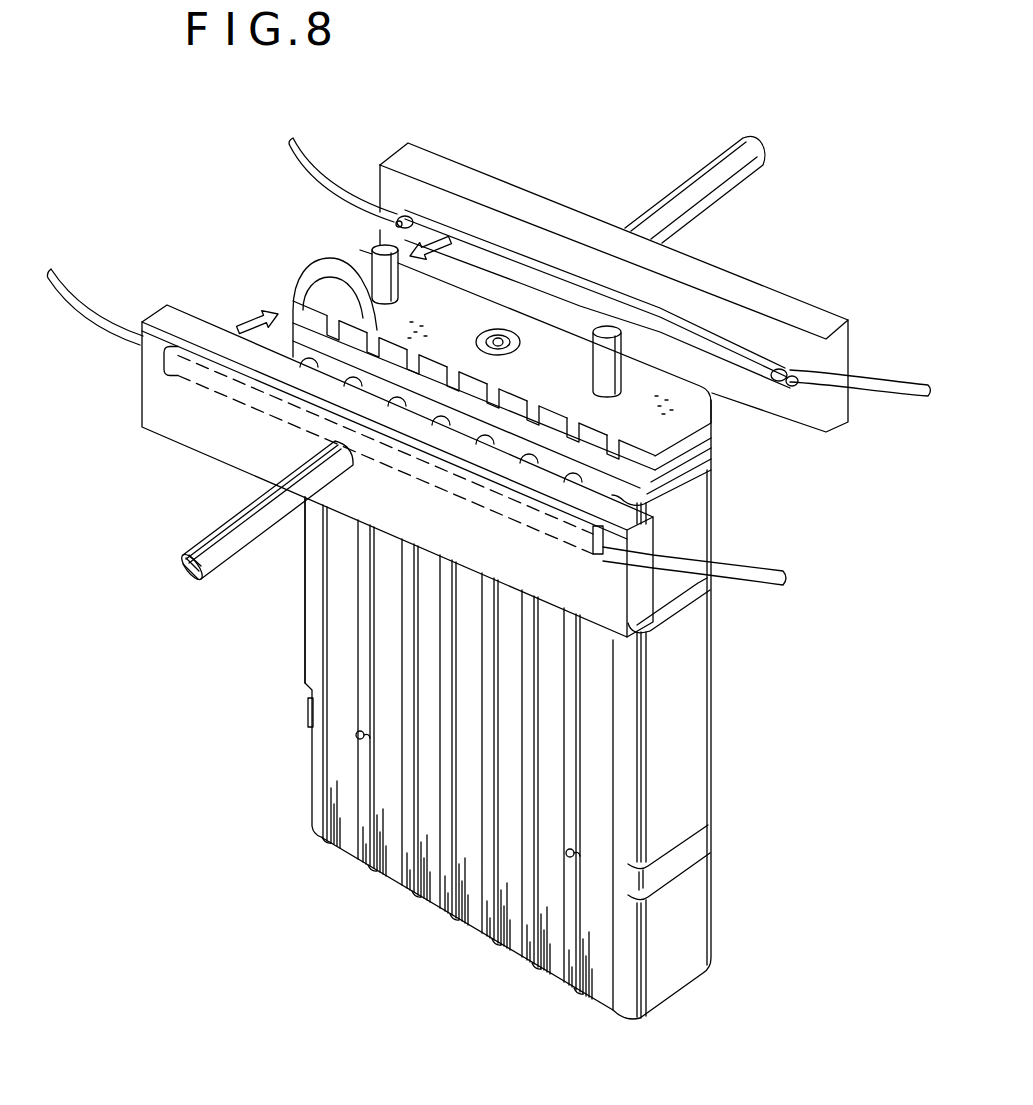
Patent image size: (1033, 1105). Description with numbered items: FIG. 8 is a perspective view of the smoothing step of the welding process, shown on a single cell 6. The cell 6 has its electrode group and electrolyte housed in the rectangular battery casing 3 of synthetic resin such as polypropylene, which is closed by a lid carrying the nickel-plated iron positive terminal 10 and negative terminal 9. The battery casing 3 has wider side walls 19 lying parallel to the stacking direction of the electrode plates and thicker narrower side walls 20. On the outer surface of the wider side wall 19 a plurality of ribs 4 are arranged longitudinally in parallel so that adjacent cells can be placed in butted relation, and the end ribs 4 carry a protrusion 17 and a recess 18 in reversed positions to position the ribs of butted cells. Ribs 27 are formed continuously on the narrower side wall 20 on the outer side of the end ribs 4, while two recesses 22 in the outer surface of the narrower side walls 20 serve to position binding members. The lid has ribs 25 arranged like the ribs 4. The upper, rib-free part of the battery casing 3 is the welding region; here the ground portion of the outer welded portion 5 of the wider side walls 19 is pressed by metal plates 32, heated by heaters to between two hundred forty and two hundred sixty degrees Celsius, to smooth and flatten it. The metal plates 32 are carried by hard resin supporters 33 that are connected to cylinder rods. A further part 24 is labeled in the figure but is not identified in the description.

The battery casing 3 is at (607, 978).
The ribs 4 is at (357, 603).
The outer welded portion 5 is at (667, 493).
The cell 6 is at (240, 633).
The negative terminal 9 is at (600, 372).
The positive terminal 10 is at (380, 277).
The protrusion 17 is at (567, 853).
The recess 18 is at (360, 730).
The wider side walls 19 is at (383, 778).
The narrower side walls 20 is at (690, 907).
The recesses 22 is at (707, 583).
The projection 24 is at (357, 257).
The ribs 25 is at (300, 284).
The ribs 27 is at (323, 808).
The metal plates 32 is at (484, 258).
The hard resin supporters 33 is at (765, 297).